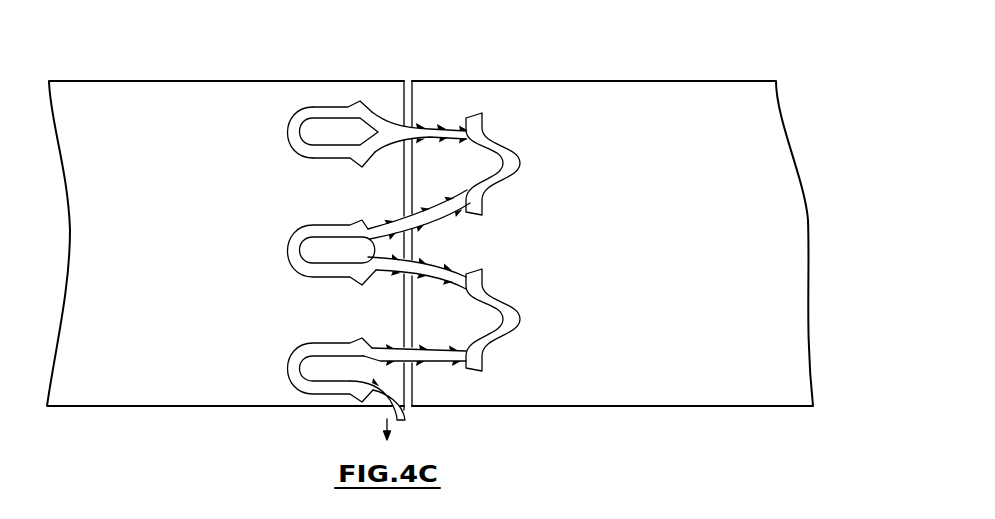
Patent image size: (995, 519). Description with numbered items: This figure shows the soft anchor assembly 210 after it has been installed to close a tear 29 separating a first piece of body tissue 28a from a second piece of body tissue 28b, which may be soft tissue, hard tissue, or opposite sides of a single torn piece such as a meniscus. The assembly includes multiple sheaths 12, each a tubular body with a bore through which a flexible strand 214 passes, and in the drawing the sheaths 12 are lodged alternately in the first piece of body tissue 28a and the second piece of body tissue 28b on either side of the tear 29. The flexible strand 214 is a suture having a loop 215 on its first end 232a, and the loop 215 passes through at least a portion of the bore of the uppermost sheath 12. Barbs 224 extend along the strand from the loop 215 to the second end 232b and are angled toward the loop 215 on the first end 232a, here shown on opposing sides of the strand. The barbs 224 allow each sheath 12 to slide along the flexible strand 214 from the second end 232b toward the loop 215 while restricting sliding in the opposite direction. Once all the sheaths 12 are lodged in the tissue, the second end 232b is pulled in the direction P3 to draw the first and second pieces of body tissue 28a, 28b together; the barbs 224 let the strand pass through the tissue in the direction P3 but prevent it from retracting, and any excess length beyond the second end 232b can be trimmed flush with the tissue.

The sheath 12 is at (382, 244).
The first piece of body tissue 28a is at (192, 98).
The second piece of body tissue 28b is at (652, 98).
The tear 29 is at (409, 78).
The soft anchor assembly 210 is at (490, 110).
The flexible strand 214 is at (383, 148).
The loop 215 is at (378, 110).
The barbs 224 is at (414, 127).
The first end 232a is at (300, 157).
The second end 232b is at (403, 421).
The direction P3 is at (371, 429).